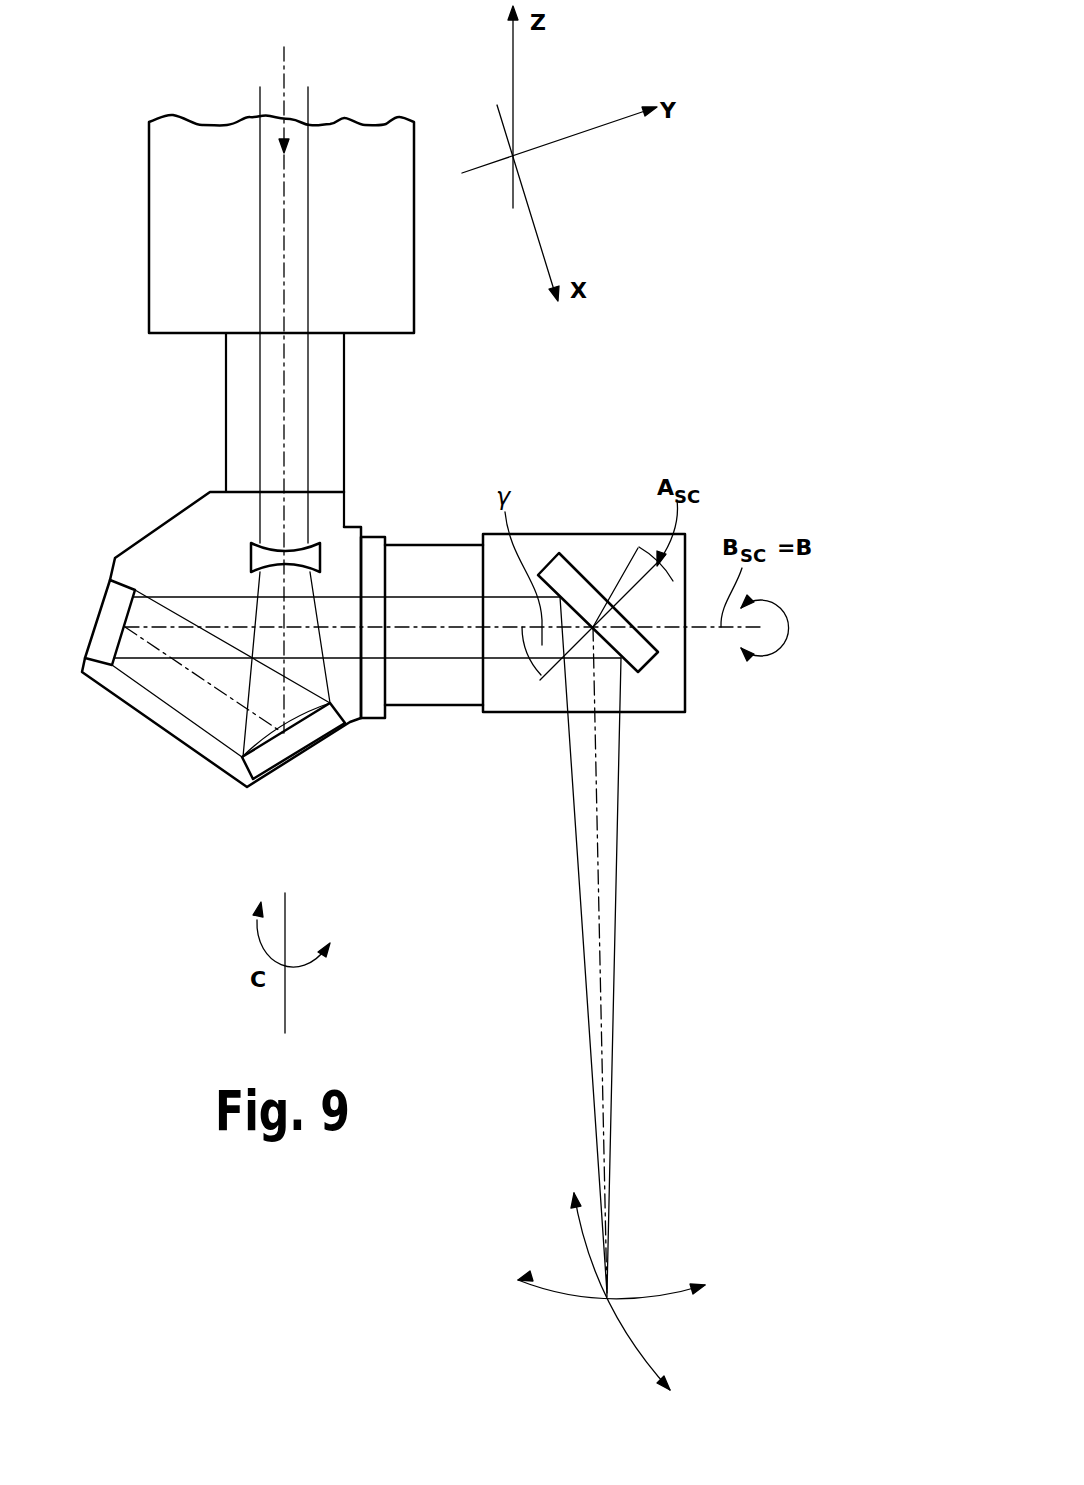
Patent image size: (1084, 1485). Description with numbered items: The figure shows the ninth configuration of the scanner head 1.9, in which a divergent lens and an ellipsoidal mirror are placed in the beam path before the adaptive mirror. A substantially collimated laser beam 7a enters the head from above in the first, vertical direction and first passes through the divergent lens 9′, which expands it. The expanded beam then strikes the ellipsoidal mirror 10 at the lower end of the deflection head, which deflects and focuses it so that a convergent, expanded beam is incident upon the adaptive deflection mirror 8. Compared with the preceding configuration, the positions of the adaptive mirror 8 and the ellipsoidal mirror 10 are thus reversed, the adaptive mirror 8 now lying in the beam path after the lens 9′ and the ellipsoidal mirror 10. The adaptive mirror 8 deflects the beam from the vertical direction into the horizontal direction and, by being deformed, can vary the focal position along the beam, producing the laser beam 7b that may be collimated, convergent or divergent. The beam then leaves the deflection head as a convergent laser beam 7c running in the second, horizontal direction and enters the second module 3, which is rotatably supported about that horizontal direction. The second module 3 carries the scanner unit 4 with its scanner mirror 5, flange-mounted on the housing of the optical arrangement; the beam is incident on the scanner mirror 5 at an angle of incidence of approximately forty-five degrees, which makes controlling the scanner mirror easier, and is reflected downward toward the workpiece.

The scanner head 1.9 is at (716, 256).
The second module 3 is at (454, 740).
The scanner unit 4 is at (583, 534).
The scanner mirror 5 is at (647, 658).
The laser beam 7a is at (283, 396).
The laser beam 7b is at (207, 623).
The convergent laser beam 7c is at (443, 625).
The adaptive deflection mirror 8 is at (113, 612).
The divergent lens 9′ is at (318, 557).
The ellipsoidal mirror 10 is at (300, 748).